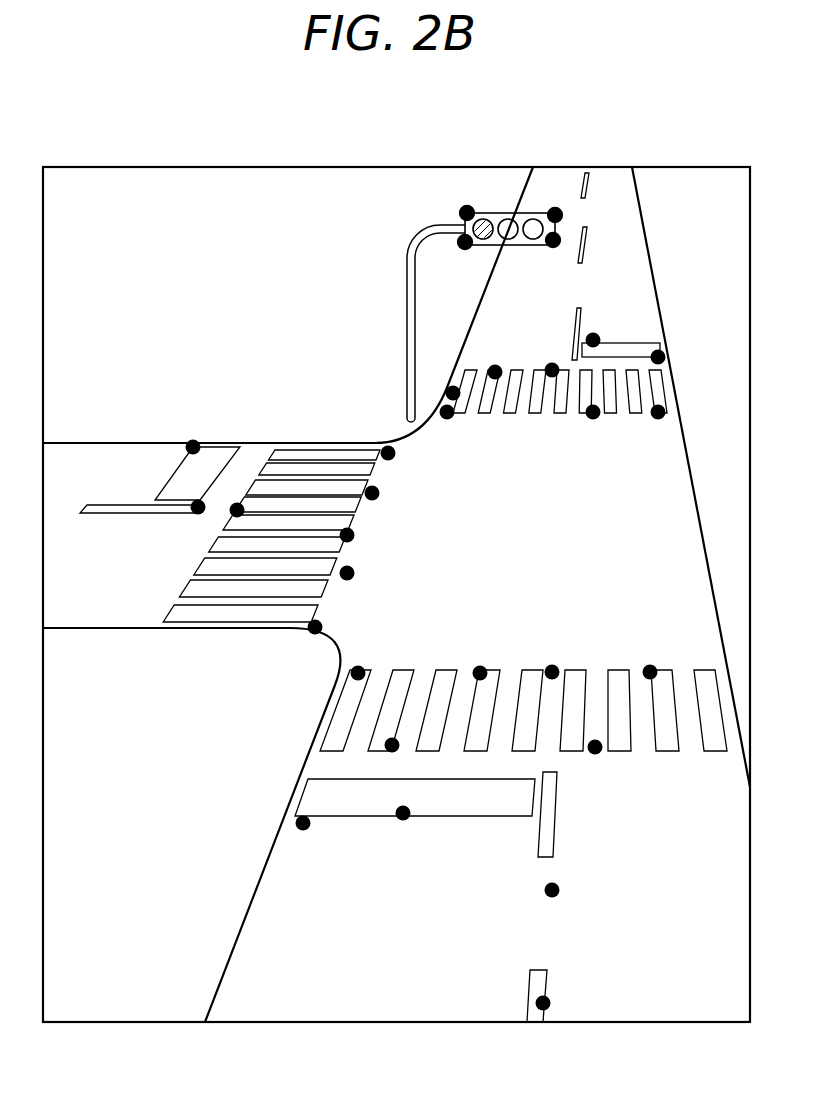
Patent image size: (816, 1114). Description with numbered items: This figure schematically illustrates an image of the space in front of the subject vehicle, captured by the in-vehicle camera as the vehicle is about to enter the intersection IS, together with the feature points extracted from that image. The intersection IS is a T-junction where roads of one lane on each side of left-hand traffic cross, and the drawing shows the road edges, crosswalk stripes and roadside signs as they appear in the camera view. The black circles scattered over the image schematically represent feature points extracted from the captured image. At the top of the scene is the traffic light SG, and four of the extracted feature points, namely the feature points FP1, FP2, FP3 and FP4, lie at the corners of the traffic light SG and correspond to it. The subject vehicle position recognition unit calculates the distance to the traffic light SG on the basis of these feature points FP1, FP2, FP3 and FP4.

The traffic light SG is at (493, 212).
The feature point FP1 is at (462, 210).
The feature point FP2 is at (462, 246).
The feature point FP3 is at (561, 213).
The feature point FP4 is at (552, 247).
The intersection IS is at (667, 493).